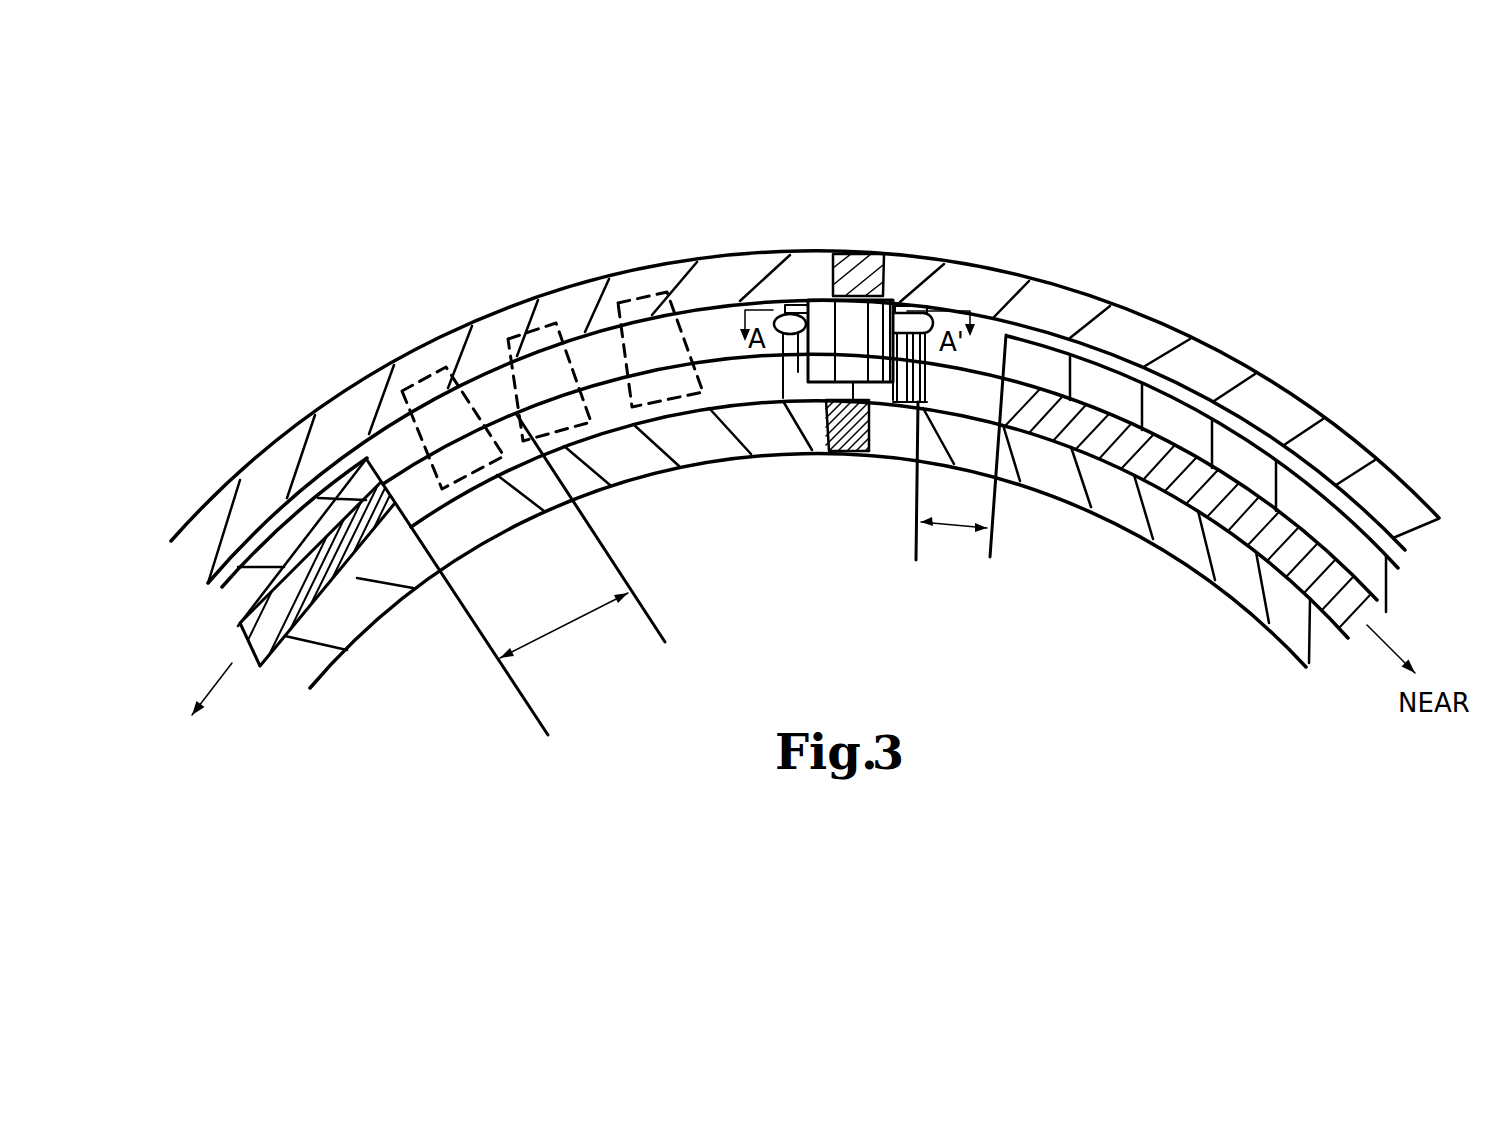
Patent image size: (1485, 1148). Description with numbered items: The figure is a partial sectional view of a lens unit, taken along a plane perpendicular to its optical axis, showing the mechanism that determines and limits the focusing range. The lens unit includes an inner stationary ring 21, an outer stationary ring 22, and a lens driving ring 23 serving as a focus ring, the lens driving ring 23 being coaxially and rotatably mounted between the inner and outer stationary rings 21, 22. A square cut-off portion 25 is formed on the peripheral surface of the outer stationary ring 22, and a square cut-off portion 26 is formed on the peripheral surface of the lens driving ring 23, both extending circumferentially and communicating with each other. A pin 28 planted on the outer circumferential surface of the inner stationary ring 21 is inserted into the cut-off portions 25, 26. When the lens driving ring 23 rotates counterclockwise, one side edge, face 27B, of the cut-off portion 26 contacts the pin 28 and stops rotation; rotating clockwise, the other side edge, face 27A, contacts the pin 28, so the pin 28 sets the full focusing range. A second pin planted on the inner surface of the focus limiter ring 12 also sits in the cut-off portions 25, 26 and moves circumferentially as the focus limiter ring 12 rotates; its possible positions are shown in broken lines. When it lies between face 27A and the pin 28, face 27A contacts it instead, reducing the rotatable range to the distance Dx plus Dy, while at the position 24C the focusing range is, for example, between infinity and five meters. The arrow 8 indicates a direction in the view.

The rotation direction arrow 8 is at (201, 706).
The focus limiter ring 12 is at (1240, 382).
The inner stationary ring 21 is at (1228, 560).
The outer stationary ring 22 is at (1285, 483).
The lens driving ring 23 is at (1316, 540).
The position of pin 24 24C is at (630, 292).
The square cut-off portion 25 is at (718, 348).
The square cut-off portion 26 is at (760, 387).
The face 27A is at (398, 515).
The face 27B is at (996, 400).
The pin 28 is at (798, 305).